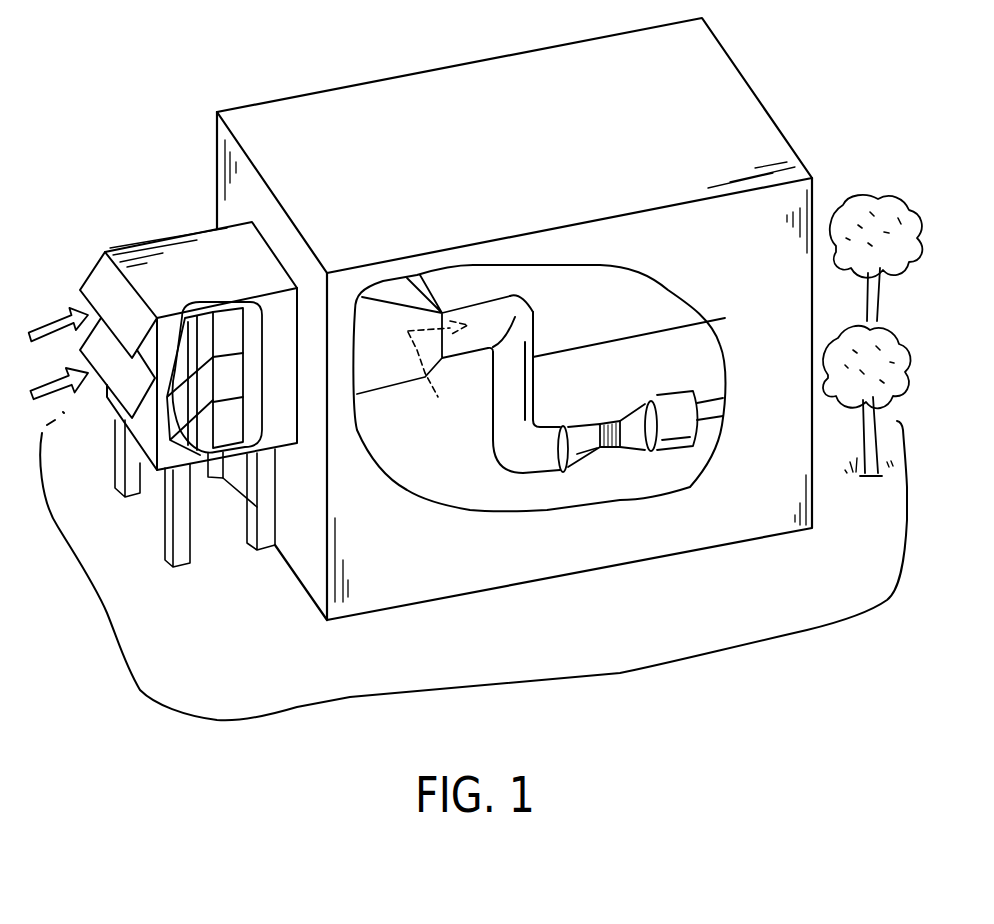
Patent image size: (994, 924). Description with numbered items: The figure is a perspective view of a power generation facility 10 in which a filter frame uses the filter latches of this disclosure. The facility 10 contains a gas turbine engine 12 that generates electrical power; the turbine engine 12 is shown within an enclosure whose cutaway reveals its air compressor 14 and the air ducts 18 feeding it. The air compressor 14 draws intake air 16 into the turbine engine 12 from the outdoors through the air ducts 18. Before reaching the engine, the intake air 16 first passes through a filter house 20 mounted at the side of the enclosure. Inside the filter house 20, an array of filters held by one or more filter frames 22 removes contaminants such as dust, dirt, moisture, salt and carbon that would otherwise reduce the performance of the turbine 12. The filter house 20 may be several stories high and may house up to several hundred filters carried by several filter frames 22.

The power generation facility 10 is at (260, 45).
The gas turbine engine 12 is at (608, 401).
The air compressor 14 is at (578, 402).
The intake air 16 is at (62, 323).
The air ducts 18 is at (512, 306).
The filter house 20 is at (159, 204).
The filter frames 22 is at (247, 306).